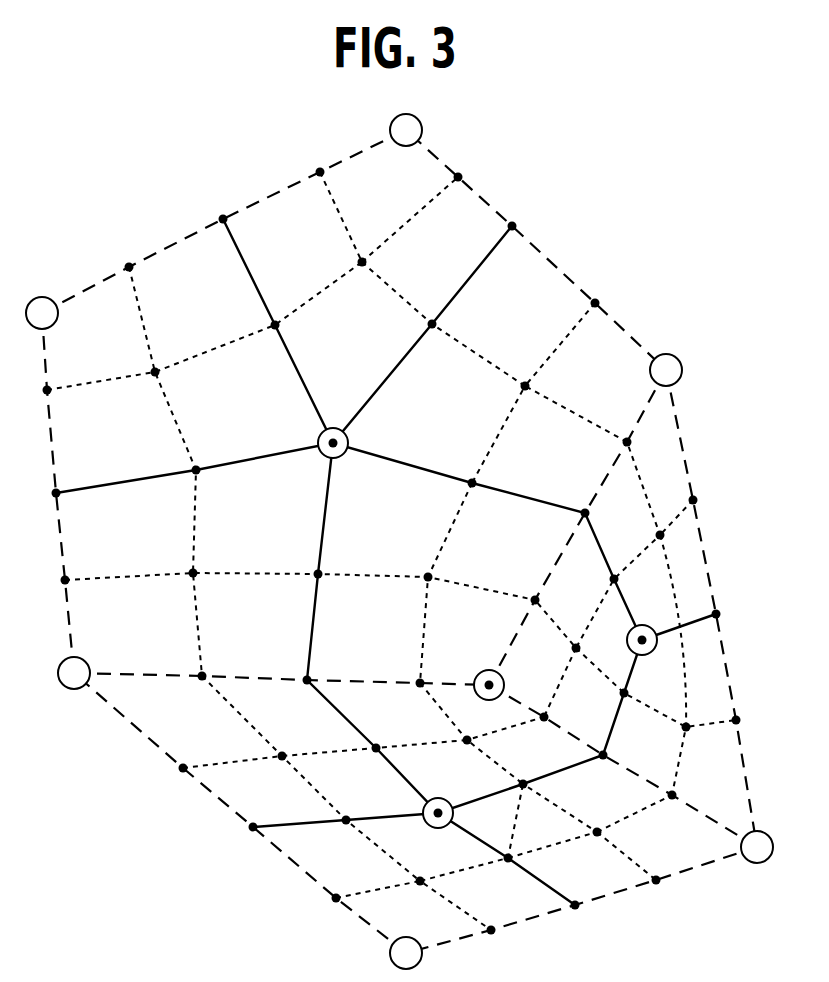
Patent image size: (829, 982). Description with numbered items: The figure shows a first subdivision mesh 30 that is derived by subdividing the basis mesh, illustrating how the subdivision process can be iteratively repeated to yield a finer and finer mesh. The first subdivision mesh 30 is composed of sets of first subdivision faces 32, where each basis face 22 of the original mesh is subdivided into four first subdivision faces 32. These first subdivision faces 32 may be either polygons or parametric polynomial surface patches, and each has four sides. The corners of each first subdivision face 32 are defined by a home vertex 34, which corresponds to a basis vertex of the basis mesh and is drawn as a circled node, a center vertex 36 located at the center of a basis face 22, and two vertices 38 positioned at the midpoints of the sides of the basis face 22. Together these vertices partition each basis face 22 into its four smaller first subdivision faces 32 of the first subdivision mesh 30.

The first subdivision mesh 30 is at (672, 237).
The basis face 22 is at (560, 325).
The first subdivision face 32 is at (527, 311).
The home vertex 34 is at (338, 427).
The center vertex 36 is at (524, 381).
The midpoint vertex 38 is at (434, 320).